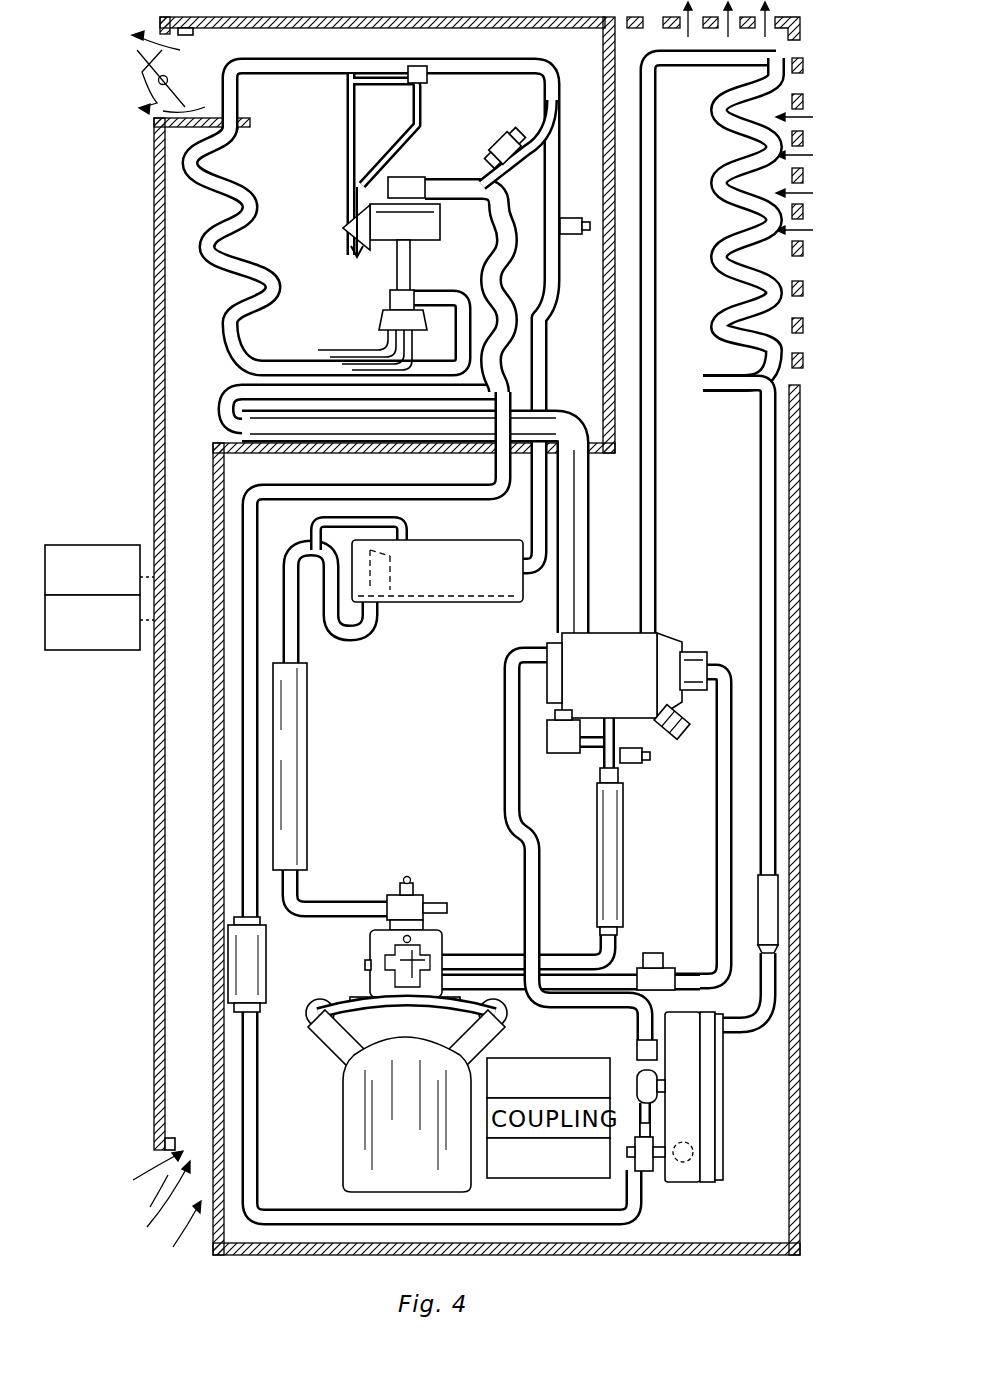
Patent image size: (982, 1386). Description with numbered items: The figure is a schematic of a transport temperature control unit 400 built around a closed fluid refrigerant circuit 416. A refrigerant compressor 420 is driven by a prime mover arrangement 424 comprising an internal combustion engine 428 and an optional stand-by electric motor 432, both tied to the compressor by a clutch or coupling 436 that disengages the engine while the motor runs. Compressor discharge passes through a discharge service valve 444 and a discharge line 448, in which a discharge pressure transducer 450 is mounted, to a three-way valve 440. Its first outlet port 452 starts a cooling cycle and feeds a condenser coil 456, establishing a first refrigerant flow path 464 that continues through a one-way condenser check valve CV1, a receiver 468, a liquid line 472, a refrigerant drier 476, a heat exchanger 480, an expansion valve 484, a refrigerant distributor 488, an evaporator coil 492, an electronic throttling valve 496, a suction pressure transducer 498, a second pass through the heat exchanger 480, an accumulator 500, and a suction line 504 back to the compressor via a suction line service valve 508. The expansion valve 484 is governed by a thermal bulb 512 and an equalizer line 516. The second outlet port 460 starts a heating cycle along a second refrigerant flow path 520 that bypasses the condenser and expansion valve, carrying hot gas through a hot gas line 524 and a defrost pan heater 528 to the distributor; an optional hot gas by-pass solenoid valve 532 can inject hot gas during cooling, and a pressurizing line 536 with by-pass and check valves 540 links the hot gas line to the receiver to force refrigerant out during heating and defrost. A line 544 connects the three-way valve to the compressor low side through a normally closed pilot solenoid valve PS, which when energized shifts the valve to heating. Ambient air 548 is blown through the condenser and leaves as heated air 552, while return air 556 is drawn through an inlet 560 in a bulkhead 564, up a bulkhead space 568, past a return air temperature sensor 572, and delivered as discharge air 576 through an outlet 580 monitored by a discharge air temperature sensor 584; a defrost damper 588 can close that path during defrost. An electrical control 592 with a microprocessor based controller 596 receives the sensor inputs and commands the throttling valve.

The temperature control unit 400 is at (812, 590).
The closed fluid refrigerant circuit 416 is at (468, 620).
The refrigerant compressor 420 is at (343, 1161).
The prime mover arrangement 424 is at (505, 1052).
The internal combustion engine 428 is at (552, 1170).
The stand-by electric motor 432 is at (566, 1062).
The clutch or coupling 436 is at (487, 1120).
The three-way valve 440 is at (665, 648).
The discharge service valve 444 is at (385, 950).
The discharge line 448 is at (483, 962).
The discharge pressure transducer 450 is at (633, 765).
The first outlet port 452 is at (655, 630).
The condenser coil 456 is at (728, 188).
The second outlet port 460 is at (580, 630).
The first refrigerant flow path 464 is at (659, 450).
The receiver 468 is at (690, 1064).
The liquid line 472 is at (652, 1203).
The refrigerant drier 476 is at (262, 978).
The heat exchanger 480 is at (525, 350).
The expansion valve 484 is at (350, 228).
The refrigerant distributor 488 is at (390, 300).
The evaporator coil 492 is at (248, 176).
The electronic throttling valve 496 is at (488, 153).
The suction pressure transducer 498 is at (575, 234).
The accumulator 500 is at (483, 548).
The suction line 504 is at (335, 904).
The suction line service valve 508 is at (423, 897).
The thermal bulb 512 is at (385, 84).
The equalizer line 516 is at (430, 83).
The second refrigerant flow path 520 is at (587, 512).
The hot gas line 524 is at (580, 481).
The defrost pan heater 528 is at (230, 392).
The hot gas by-pass solenoid valve 532 is at (568, 755).
The by-pass or pressurizing line 536 is at (505, 760).
The by-pass and check valves 540 is at (660, 1087).
The conduit or line 544 is at (722, 832).
The ambient air 548 is at (815, 157).
The heated air 552 is at (780, 22).
The return air 556 is at (137, 1189).
The inlet 560 is at (164, 1239).
The bulkhead 564 is at (154, 1004).
The bulkhead space 568 is at (154, 901).
The return air temperature sensor 572 is at (165, 1143).
The discharge air 576 is at (149, 72).
The outlet 580 is at (150, 29).
The discharge air temperature sensor 584 is at (200, 38).
The defrost damper 588 is at (177, 93).
The electrical control 592 is at (92, 645).
The microprocessor based controller 596 is at (106, 545).
The pilot solenoid valve PS is at (660, 953).
The one-way condenser check valve CV1 is at (773, 914).